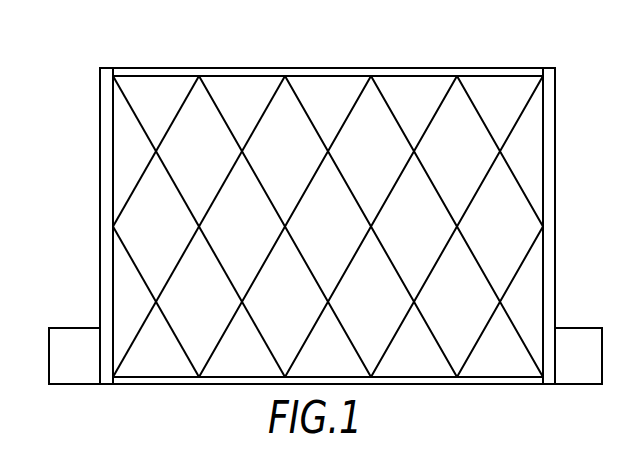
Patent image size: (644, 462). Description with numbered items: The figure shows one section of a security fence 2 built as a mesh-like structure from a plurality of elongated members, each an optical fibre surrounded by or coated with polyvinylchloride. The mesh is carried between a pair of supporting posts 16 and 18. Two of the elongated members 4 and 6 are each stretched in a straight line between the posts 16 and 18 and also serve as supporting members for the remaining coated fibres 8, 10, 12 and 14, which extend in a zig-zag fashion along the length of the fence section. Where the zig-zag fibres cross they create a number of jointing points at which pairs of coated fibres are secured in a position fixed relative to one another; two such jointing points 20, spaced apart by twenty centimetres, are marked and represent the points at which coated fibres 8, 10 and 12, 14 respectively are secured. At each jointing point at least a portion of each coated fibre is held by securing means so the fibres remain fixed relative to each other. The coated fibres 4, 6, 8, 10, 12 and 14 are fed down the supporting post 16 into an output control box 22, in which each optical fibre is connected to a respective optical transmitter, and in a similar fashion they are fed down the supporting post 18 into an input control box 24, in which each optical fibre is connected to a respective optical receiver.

The security fence 2 is at (415, 66).
The elongated member 4 is at (210, 379).
The elongated member 6 is at (156, 74).
The coated fibre 8 is at (122, 366).
The coated fibre 10 is at (128, 252).
The coated fibre 12 is at (132, 187).
The coated fibre 14 is at (138, 123).
The supporting post 16 is at (102, 102).
The supporting post 18 is at (551, 108).
The jointing point 20 is at (498, 150).
The output control box 22 is at (60, 342).
The input control box 24 is at (587, 343).